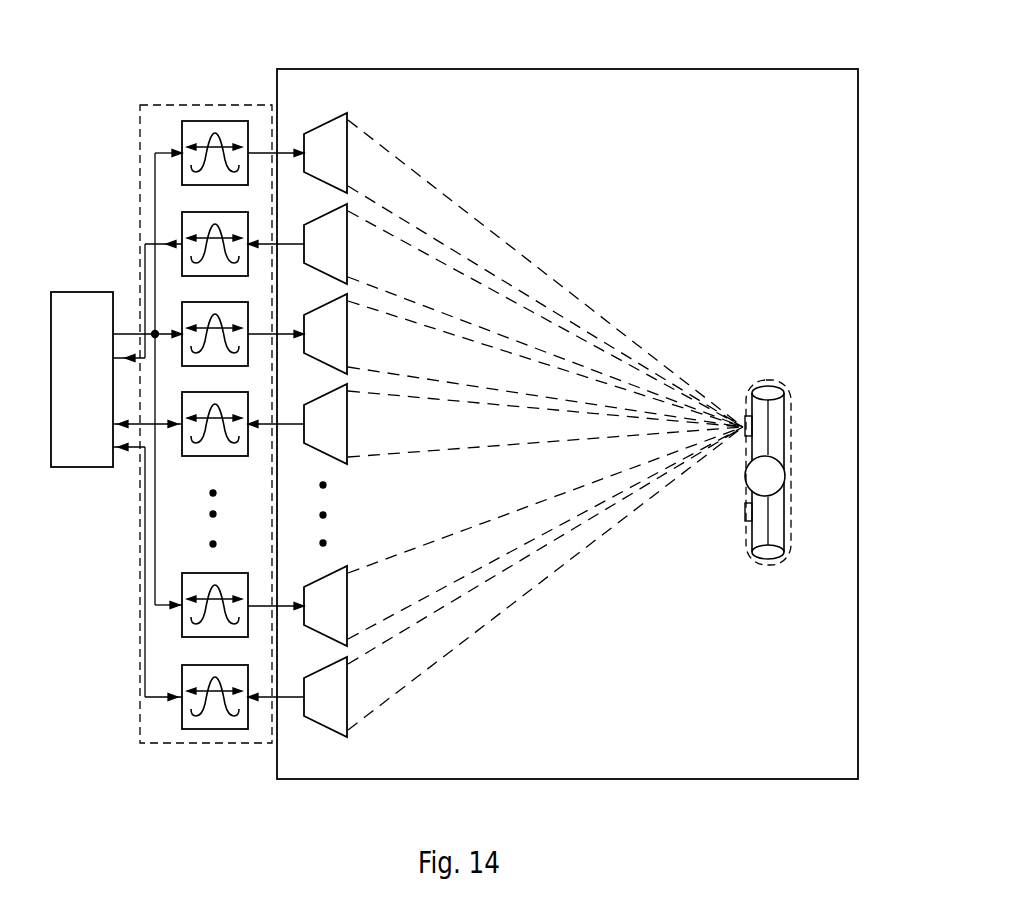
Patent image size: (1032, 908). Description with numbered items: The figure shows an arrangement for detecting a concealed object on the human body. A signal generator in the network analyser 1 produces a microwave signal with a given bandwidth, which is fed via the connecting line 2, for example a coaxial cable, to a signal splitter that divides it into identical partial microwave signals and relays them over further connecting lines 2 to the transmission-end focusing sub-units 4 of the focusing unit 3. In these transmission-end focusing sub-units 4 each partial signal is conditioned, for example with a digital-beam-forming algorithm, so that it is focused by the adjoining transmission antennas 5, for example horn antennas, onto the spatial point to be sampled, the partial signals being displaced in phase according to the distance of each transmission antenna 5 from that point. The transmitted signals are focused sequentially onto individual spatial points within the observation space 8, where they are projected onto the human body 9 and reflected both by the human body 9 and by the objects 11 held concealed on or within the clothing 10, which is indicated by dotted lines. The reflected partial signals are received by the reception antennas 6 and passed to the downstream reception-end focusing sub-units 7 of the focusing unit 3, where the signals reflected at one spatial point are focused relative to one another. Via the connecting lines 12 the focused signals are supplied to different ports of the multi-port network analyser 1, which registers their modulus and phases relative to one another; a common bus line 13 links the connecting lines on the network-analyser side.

The network analyser 1 is at (88, 302).
The connecting line 2 is at (153, 362).
The focusing unit 3 is at (177, 106).
The transmission-end focusing sub-unit 4 is at (227, 379).
The transmission antenna 5 is at (328, 368).
The reception antenna 6 is at (297, 455).
The reception-end focusing sub-unit 7 is at (220, 507).
The observation space 8 is at (693, 83).
The human body 9 is at (780, 435).
The clothing 10 is at (781, 380).
The objects 11 is at (745, 436).
The connecting line 12 is at (144, 470).
The bus line 13 is at (157, 446).